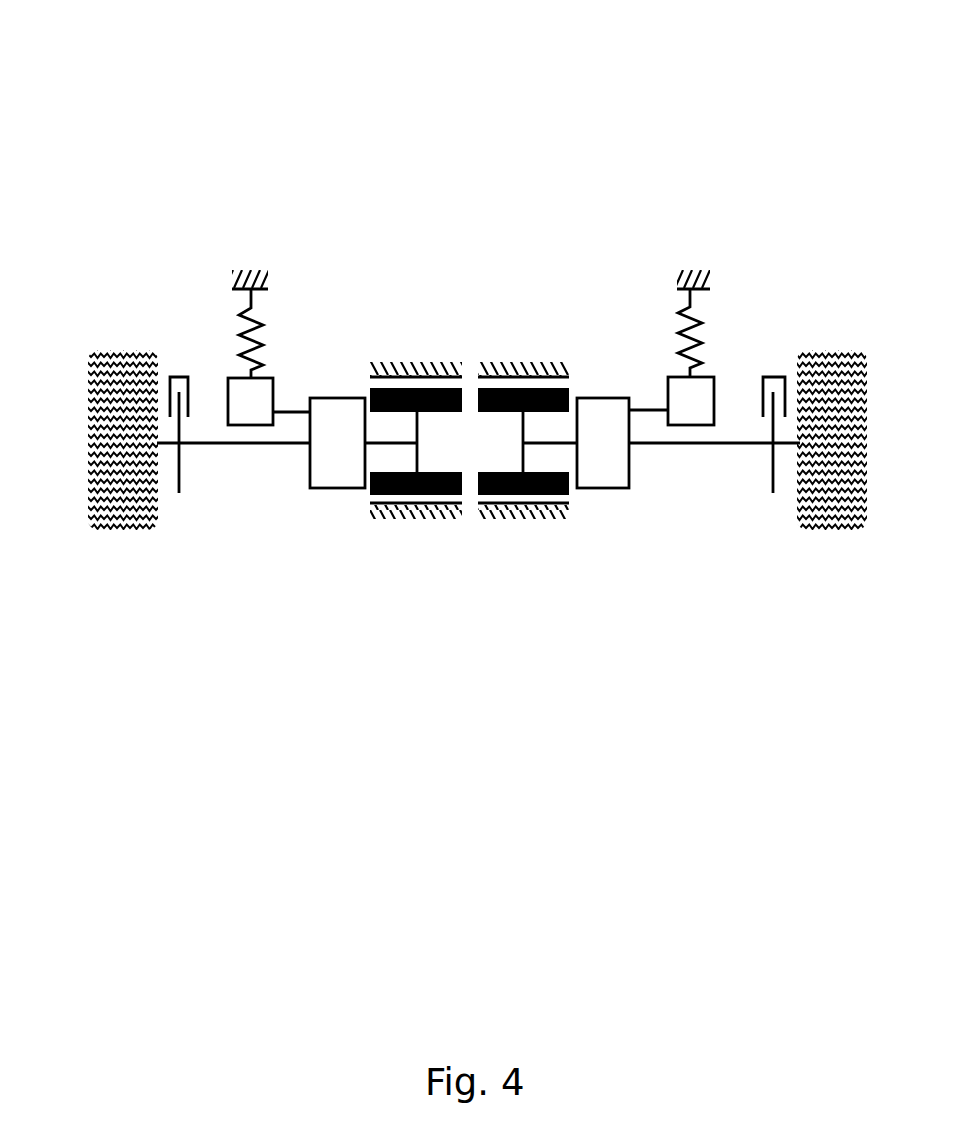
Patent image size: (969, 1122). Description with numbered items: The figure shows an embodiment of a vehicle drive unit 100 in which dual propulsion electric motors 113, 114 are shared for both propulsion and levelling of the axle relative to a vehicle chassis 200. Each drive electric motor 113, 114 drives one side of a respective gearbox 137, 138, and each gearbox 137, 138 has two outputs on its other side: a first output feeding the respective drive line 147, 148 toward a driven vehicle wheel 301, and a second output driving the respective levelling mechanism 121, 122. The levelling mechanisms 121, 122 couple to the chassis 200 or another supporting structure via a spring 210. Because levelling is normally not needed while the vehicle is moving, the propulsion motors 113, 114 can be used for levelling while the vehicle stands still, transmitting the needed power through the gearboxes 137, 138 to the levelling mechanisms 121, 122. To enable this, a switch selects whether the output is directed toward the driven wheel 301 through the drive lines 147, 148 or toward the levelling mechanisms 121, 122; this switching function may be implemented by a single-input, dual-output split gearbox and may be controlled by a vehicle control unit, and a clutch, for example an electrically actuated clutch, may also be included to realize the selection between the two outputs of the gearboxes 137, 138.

The drive unit 100 is at (251, 126).
The vehicle chassis 200 is at (240, 272).
The spring 210 is at (246, 337).
The vehicle wheel 301 is at (118, 365).
The drive electric motor 113 is at (404, 360).
The drive electric motor 114 is at (532, 365).
The levelling mechanism 121 is at (250, 425).
The levelling mechanism 122 is at (714, 387).
The gearbox 137 is at (335, 488).
The gearbox 138 is at (602, 488).
The drive line 147 is at (208, 443).
The drive line 148 is at (698, 443).